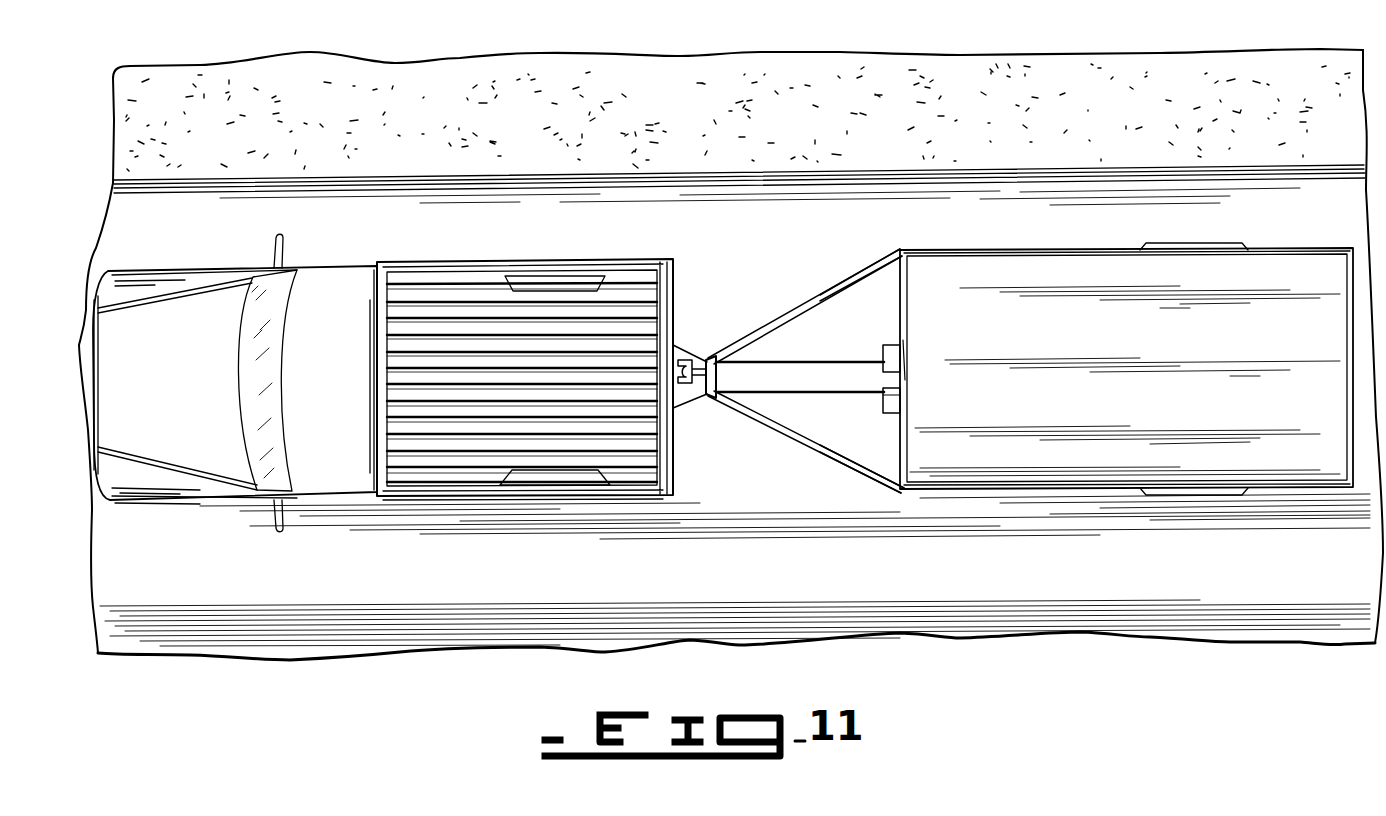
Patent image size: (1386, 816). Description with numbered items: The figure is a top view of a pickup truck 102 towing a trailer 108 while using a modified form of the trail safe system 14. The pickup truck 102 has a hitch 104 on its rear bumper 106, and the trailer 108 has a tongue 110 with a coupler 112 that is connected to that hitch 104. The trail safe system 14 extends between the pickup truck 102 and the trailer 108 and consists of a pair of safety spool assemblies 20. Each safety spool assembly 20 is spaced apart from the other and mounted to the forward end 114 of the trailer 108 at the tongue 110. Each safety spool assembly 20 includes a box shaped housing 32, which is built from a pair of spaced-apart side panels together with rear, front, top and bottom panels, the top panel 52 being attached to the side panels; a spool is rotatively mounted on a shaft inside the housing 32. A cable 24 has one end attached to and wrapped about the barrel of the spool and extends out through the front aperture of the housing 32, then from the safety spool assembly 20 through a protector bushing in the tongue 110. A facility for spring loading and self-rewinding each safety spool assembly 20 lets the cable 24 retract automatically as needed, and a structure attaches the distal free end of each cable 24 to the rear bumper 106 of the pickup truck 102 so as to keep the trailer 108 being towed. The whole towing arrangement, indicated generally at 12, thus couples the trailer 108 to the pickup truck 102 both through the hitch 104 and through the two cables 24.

The towing system 12 is at (800, 497).
The trail safe system 14 is at (822, 278).
The safety spool assembly 20 is at (882, 351).
The cable 24 is at (763, 358).
The box shaped housing 32 is at (893, 414).
The top panel 52 is at (900, 350).
The pickup truck 102 is at (405, 262).
The hitch 104 is at (688, 345).
The rear bumper 106 is at (676, 462).
The trailer 108 is at (1015, 252).
The tongue 110 is at (846, 455).
The coupler 112 is at (680, 400).
The forward end 114 is at (897, 283).